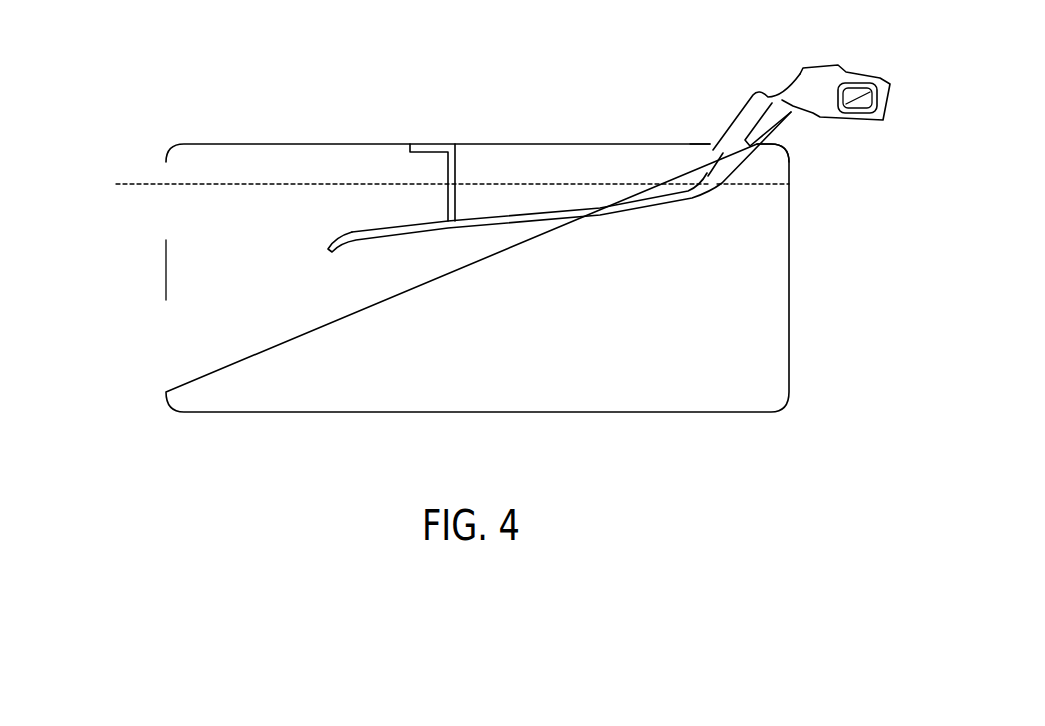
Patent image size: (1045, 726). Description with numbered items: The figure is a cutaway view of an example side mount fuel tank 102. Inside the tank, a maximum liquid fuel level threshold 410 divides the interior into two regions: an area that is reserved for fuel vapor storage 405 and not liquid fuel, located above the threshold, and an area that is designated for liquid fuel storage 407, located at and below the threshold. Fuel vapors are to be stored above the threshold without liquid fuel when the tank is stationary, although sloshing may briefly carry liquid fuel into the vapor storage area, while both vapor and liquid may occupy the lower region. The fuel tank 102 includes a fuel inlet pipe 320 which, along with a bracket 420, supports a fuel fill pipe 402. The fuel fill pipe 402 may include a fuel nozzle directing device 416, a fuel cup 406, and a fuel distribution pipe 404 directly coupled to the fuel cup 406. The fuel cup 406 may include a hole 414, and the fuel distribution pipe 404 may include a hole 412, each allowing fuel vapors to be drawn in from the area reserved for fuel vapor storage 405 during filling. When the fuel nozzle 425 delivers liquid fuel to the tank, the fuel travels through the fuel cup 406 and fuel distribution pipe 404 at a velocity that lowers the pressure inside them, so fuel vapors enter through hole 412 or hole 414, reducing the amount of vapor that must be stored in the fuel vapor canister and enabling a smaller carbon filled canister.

The fuel tank 102 is at (790, 288).
The fuel inlet pipe 320 is at (776, 96).
The fuel fill pipe 402 is at (559, 190).
The fuel distribution pipe 404 is at (497, 227).
The area reserved for fuel vapor storage 405 is at (328, 168).
The fuel cup 406 is at (760, 147).
The area designated for liquid fuel storage 407 is at (183, 233).
The maximum liquid fuel level threshold 410 is at (198, 187).
The hole 412 is at (702, 175).
The hole 414 is at (715, 147).
The fuel nozzle directing device 416 is at (738, 117).
The bracket 420 is at (458, 155).
The fuel nozzle 425 is at (821, 117).